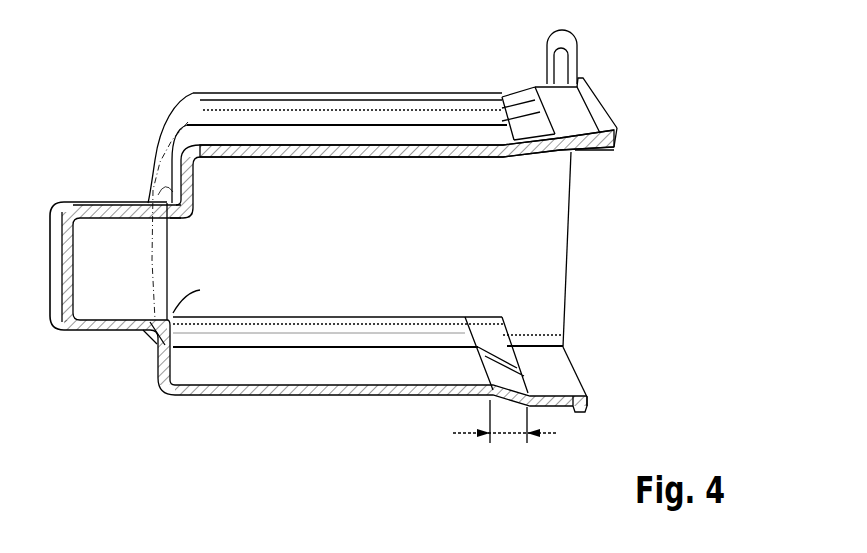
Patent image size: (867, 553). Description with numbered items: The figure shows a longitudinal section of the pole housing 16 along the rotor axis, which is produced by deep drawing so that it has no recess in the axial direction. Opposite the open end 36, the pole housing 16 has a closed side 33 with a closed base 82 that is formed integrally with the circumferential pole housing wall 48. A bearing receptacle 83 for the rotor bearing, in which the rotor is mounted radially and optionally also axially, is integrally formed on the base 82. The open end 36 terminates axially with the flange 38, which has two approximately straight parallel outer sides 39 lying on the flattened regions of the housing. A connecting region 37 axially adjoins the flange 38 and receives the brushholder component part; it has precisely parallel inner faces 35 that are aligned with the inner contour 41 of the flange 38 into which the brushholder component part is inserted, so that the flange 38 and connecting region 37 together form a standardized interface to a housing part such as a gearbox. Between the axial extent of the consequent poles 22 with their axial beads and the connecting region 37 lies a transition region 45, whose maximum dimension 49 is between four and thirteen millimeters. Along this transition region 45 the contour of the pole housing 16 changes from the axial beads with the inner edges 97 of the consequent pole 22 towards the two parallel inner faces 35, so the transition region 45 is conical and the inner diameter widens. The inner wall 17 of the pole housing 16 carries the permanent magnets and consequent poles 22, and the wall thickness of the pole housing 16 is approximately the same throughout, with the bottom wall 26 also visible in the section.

The pole housing 16 is at (343, 78).
The inner wall 17 is at (157, 347).
The consequent poles 22 is at (320, 152).
The bottom wall 26 is at (313, 388).
The closed side 33 is at (158, 353).
The inner faces 35 is at (583, 153).
The open end 36 is at (590, 260).
The connecting region 37 is at (550, 107).
The flange 38 is at (597, 45).
The outer sides 39 is at (607, 98).
The inner contour 41 is at (613, 150).
The transition region 45 is at (503, 103).
The pole housing wall 48 is at (237, 367).
The maximum dimension 49 is at (505, 437).
The base 82 is at (168, 168).
The bearing receptacle 83 is at (120, 222).
The inner edges 97 is at (206, 330).